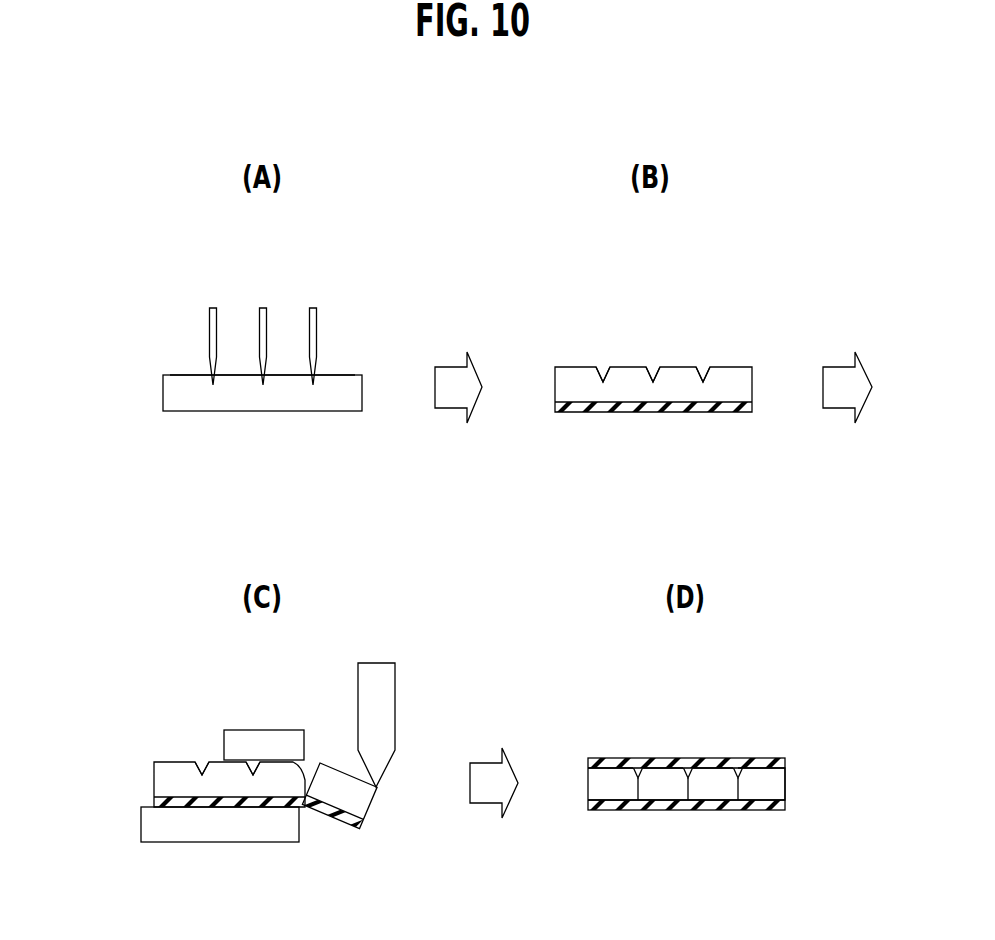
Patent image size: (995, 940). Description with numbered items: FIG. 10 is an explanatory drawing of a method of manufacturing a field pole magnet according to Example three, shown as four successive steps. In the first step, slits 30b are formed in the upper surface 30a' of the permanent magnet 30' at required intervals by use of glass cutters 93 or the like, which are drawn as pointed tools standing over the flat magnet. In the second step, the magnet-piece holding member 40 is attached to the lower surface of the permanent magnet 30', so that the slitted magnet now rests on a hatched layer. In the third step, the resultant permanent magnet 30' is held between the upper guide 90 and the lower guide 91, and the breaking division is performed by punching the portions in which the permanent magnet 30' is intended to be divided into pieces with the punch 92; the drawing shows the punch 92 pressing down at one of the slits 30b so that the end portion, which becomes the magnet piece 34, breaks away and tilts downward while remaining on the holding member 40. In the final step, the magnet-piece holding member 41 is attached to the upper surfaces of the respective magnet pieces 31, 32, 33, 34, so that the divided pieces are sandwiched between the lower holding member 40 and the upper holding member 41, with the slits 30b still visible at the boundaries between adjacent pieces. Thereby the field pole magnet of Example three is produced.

The permanent magnet 30' is at (414, 543).
The upper surface 30a' is at (231, 334).
The glass cutters 93 is at (311, 307).
The slits 30b is at (703, 366).
The magnet-piece holding member 40 is at (713, 413).
The lower guide 91 is at (157, 825).
The upper guide 90 is at (265, 742).
The punch 92 is at (387, 683).
The magnet piece 34 is at (362, 802).
The magnet piece 31 is at (608, 778).
The magnet piece 32 is at (658, 778).
The magnet piece 33 is at (713, 779).
The magnet-piece holding member 41 is at (786, 762).